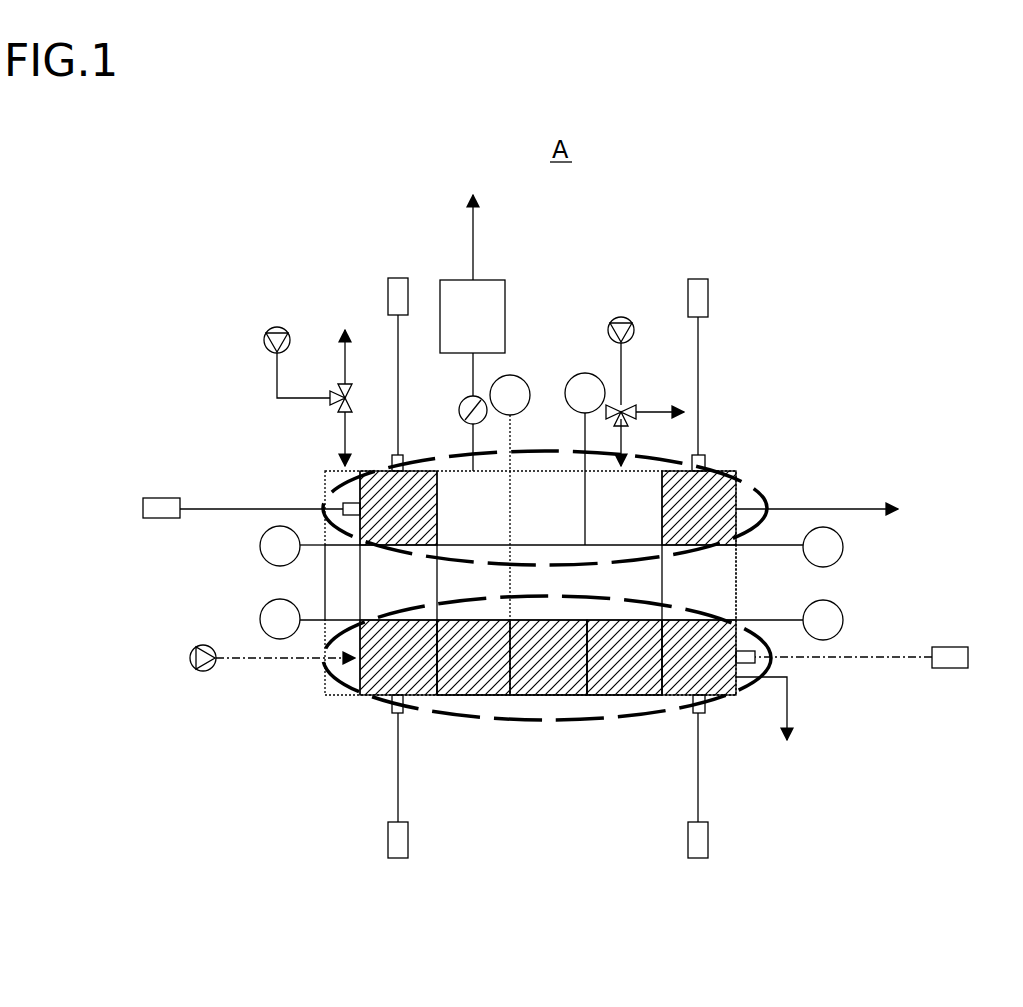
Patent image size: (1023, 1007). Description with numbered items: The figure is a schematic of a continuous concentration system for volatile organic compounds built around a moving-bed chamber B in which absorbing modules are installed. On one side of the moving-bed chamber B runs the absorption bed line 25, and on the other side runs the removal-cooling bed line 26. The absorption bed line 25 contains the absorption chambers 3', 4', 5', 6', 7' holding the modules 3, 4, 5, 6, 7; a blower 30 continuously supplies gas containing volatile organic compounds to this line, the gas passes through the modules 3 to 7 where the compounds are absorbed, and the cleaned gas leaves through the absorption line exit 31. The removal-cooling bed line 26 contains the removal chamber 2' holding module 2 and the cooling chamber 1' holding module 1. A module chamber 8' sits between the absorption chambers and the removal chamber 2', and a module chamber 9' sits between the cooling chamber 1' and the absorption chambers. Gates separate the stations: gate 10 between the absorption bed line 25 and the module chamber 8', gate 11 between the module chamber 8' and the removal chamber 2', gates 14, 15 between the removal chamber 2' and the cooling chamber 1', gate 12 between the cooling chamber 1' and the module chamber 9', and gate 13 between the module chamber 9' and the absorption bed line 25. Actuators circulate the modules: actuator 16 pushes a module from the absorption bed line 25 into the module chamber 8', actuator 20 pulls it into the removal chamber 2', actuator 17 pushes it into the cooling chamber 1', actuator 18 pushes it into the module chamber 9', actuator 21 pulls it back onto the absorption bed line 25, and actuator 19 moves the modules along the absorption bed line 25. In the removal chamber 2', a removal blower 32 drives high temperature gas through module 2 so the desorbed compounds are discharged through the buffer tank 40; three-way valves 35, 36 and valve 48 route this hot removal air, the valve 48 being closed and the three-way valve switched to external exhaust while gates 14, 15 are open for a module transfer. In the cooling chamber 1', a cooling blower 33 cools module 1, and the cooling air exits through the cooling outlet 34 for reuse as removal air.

The module 1 is at (699, 508).
The module 2 is at (398, 508).
The module 3 is at (398, 657).
The module 4 is at (473, 657).
The module 5 is at (548, 657).
The module 6 is at (624, 657).
The module 7 is at (699, 657).
The cooling chamber 1' is at (728, 448).
The removal chamber 2' is at (419, 445).
The absorption chamber 3' is at (370, 730).
The absorption chamber 4' is at (473, 725).
The absorption chamber 5' is at (548, 725).
The absorption chamber 6' is at (624, 725).
The absorption chamber 7' is at (676, 728).
The module chamber 8' is at (342, 582).
The module chamber 9' is at (762, 582).
The gate 10 is at (280, 619).
The gate 11 is at (292, 546).
The gate 12 is at (823, 547).
The gate 13 is at (823, 620).
The gate 14 is at (510, 535).
The gate 15 is at (585, 534).
The actuator 16 is at (400, 858).
The actuator 17 is at (158, 498).
The actuator 18 is at (695, 278).
The actuator 19 is at (965, 647).
The actuator 20 is at (400, 276).
The actuator 21 is at (705, 858).
The absorption bed line 25 is at (775, 666).
The removal-cooling bed line 26 is at (760, 487).
The blower 30 is at (196, 647).
The absorption line exit 31 is at (769, 728).
The removal blower 32 is at (273, 330).
The cooling blower 33 is at (613, 324).
The cooling outlet 34 is at (838, 510).
The 3-way valve 35 is at (334, 410).
The 3-way valve 36 is at (627, 408).
The buffer tank 40 is at (472, 295).
The valve 48 is at (460, 406).
The moving-bed chamber B is at (320, 699).